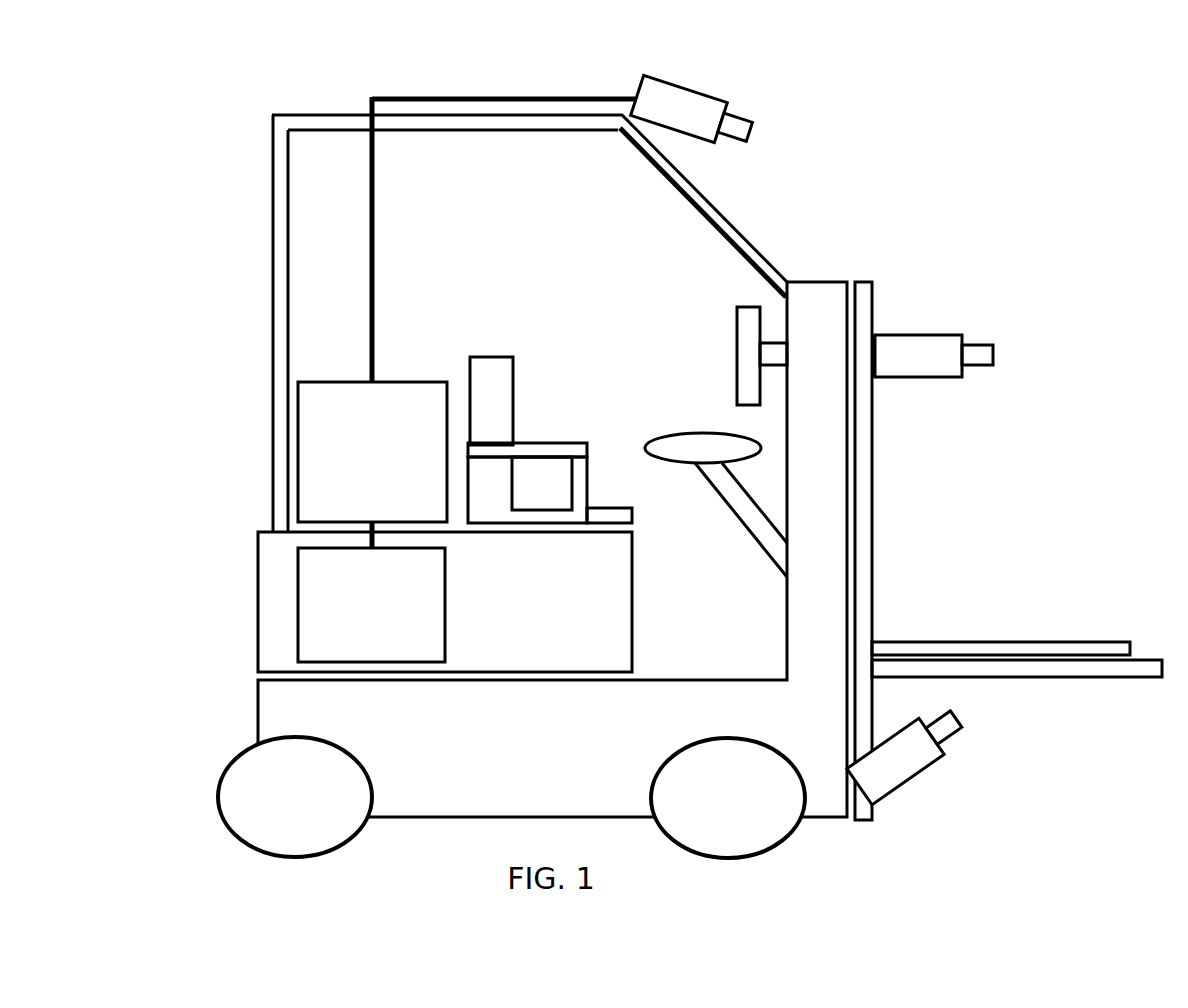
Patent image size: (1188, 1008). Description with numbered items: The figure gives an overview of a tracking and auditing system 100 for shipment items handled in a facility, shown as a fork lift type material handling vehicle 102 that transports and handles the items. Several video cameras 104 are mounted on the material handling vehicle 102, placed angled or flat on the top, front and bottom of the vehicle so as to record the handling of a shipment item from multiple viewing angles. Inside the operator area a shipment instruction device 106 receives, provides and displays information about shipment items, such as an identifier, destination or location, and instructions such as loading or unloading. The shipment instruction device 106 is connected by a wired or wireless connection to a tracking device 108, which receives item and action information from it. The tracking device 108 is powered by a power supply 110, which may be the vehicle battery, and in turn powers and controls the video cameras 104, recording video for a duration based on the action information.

The tracking and auditing system 100 is at (1104, 85).
The material handling vehicle 102 is at (272, 285).
The video cameras 104 is at (757, 123).
The shipment instruction device 106 is at (733, 335).
The tracking device 108 is at (393, 382).
The power supply 110 is at (447, 602).